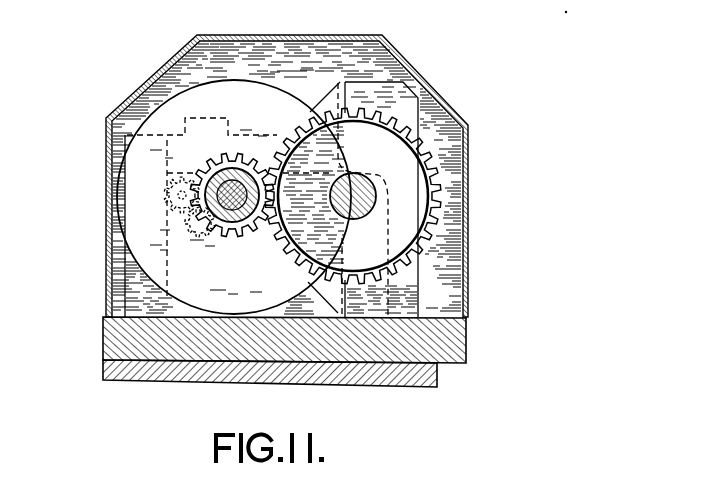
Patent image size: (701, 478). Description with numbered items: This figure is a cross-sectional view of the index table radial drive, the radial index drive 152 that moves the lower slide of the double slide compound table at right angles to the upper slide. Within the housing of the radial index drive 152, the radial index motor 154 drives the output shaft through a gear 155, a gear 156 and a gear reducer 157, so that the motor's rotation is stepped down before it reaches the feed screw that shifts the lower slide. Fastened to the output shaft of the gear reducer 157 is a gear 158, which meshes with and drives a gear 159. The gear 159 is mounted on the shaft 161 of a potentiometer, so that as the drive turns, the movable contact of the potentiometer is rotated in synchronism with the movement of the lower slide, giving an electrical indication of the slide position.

The radial index drive 152 is at (104, 219).
The radial index motor 154 is at (253, 146).
The gear 155 is at (168, 171).
The gear 156 is at (200, 238).
The gear reducer 157 is at (240, 81).
The gear 158 is at (233, 235).
The gear 159 is at (416, 259).
The shaft 161 is at (362, 176).